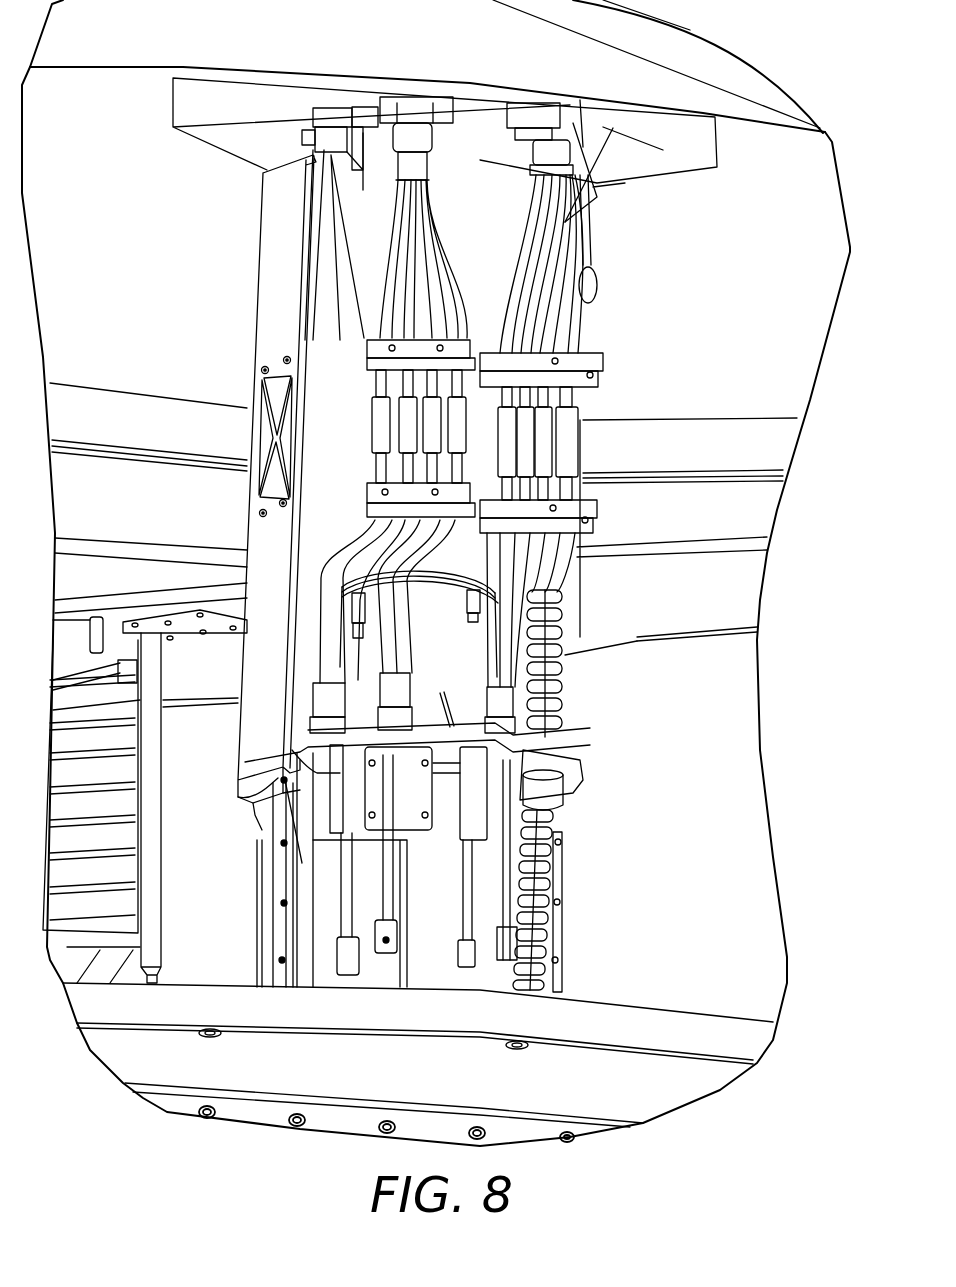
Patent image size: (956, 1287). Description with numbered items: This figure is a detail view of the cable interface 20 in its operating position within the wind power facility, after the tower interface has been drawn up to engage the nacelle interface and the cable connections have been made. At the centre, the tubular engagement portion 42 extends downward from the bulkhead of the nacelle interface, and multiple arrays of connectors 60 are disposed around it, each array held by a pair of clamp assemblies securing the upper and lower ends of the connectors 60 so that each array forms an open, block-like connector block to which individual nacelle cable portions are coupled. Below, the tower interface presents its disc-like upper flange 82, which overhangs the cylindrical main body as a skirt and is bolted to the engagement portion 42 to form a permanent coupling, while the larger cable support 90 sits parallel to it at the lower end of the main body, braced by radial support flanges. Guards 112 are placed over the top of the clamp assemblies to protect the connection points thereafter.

The cable interface 20 is at (762, 447).
The tubular engagement portion 42 is at (480, 553).
The connectors 60 is at (557, 422).
The upper flange 82 is at (458, 583).
The cable support 90 is at (263, 803).
The guards 112 is at (268, 273).